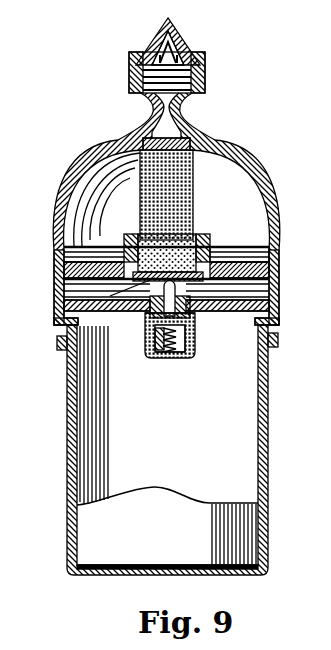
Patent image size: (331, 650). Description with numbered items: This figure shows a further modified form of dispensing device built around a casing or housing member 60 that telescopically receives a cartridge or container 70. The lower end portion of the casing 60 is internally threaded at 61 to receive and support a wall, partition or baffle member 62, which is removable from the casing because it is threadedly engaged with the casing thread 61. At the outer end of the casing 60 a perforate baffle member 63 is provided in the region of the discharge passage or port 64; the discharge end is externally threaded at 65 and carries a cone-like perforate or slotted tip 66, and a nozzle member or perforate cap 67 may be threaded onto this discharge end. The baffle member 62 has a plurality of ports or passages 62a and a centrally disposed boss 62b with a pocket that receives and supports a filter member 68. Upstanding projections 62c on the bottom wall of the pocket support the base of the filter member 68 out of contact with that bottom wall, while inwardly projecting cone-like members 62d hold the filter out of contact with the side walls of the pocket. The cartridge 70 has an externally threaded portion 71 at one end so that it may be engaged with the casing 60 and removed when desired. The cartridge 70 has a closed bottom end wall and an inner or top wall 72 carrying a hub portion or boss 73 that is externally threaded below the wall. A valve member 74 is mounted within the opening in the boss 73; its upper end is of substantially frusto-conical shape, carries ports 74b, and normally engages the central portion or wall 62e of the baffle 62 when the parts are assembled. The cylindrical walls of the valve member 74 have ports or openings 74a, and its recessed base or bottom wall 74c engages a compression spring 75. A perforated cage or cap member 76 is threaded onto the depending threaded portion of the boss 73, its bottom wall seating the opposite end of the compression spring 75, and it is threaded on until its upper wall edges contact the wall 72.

The casing or housing member 60 is at (264, 186).
The internal thread 61 is at (271, 295).
The baffle member 62 is at (271, 268).
The ports or passages 62a is at (63, 270).
The centrally disposed boss 62b is at (131, 234).
The upstanding projections 62c is at (239, 244).
The cone-like members 62d is at (202, 234).
The central portion or wall of the baffle 62e is at (63, 305).
The perforate baffle member 63 is at (198, 136).
The discharge passage or port 64 is at (168, 108).
The external thread 65 is at (205, 78).
The cone-like perforate tip 66 is at (172, 44).
The nozzle member or perforate cap 67 is at (186, 57).
The filter member 68 is at (193, 173).
The cartridge or container 70 is at (268, 385).
The externally threaded portion 71 is at (279, 340).
The inner or top wall 72 is at (197, 317).
The hub portion or boss 73 is at (148, 333).
The valve member 74 is at (147, 341).
The ports or openings 74a is at (189, 342).
The ports 74b is at (195, 303).
The recessed base or bottom wall 74c is at (160, 356).
The compression spring 75 is at (170, 355).
The perforated cage or cap member 76 is at (187, 355).